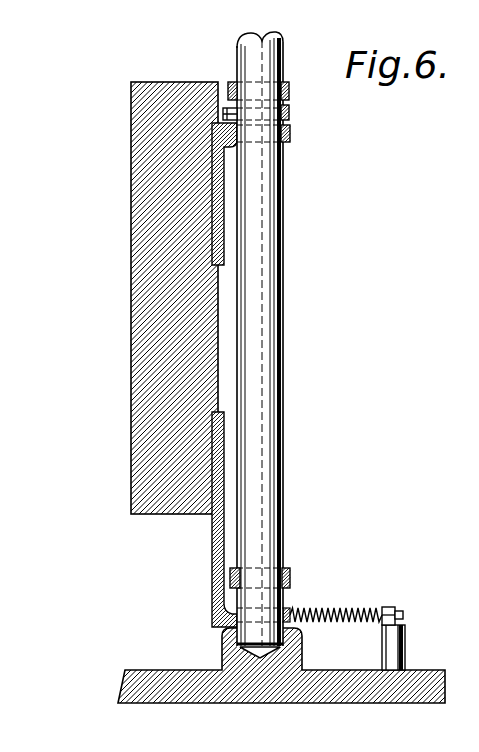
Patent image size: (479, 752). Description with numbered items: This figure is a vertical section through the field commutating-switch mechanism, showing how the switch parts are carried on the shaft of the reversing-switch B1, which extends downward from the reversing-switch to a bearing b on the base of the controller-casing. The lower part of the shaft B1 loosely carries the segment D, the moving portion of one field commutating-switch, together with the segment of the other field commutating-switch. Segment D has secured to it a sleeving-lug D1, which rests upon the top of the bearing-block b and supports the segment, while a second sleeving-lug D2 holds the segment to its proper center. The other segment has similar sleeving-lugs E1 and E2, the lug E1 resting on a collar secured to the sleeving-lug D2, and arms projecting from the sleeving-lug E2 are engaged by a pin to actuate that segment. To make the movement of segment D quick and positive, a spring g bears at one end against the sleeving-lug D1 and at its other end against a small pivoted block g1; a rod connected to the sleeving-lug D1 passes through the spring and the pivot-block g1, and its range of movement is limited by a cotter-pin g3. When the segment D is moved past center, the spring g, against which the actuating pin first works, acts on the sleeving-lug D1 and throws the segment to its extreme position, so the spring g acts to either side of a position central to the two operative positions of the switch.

The segment of the field commutating-switch D is at (130, 285).
The sleeving-lug D1 is at (210, 560).
The second sleeving-lug D2 is at (291, 135).
The shaft of the reversing-switch B1 is at (284, 44).
The sleeving-lug E1 is at (227, 81).
The sleeving-lug E2 is at (291, 578).
The spring g is at (332, 601).
The pivoted block g1 is at (387, 607).
The cotter-pin g3 is at (401, 611).
The bearing b is at (221, 647).